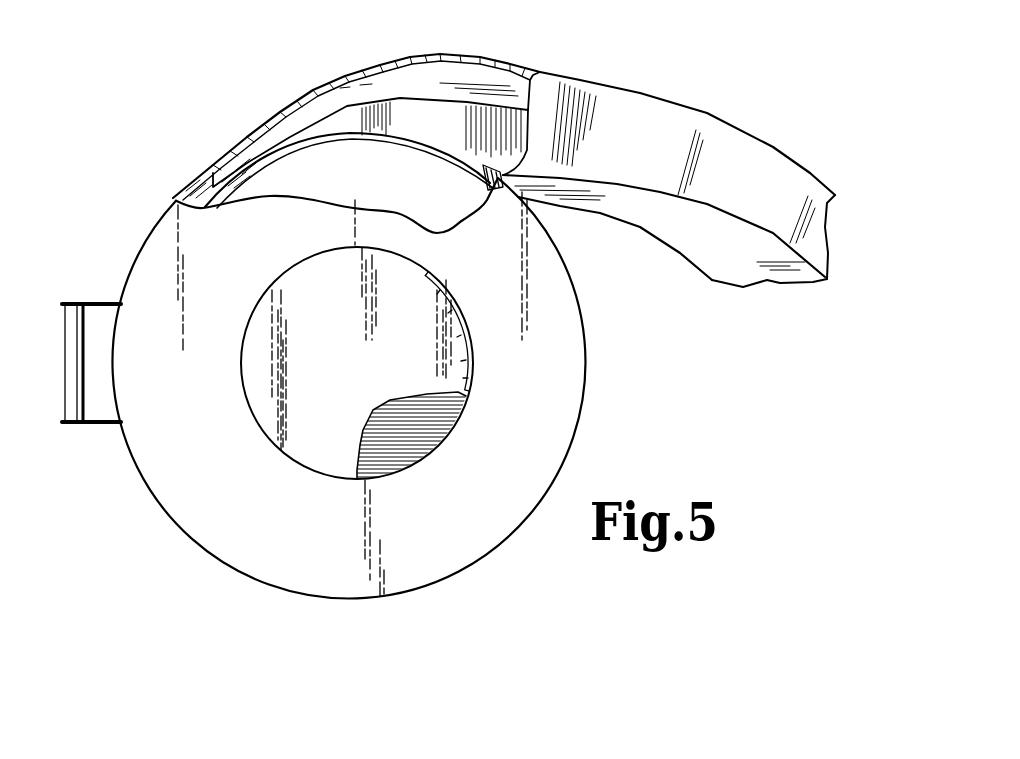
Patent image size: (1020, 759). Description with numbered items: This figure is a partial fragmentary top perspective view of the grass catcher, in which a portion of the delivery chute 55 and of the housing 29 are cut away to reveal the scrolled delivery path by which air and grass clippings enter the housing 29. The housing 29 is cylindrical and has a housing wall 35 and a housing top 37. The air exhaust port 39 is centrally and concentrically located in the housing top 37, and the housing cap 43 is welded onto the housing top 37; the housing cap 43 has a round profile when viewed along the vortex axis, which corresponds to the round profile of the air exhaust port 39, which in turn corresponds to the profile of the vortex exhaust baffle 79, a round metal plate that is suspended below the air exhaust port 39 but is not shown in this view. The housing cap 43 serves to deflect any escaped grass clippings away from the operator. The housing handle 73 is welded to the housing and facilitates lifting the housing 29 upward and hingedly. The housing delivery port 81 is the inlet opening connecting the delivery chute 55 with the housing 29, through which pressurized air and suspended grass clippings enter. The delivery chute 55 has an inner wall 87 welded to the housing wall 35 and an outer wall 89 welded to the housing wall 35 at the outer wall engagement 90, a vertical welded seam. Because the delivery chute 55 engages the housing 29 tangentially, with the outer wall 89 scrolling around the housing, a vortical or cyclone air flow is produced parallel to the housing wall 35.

The housing 29 is at (606, 365).
The housing wall 35 is at (152, 490).
The housing top 37 is at (320, 539).
The air exhaust port 39 is at (436, 466).
The housing cap 43 is at (365, 374).
The delivery chute 55 is at (657, 154).
The housing handle 73 is at (66, 360).
The vortex exhaust baffle 79 is at (387, 450).
The housing delivery port 81 is at (415, 163).
The inner wall 87 is at (721, 267).
The outer wall 89 is at (490, 60).
The outer wall engagement 90 is at (188, 183).